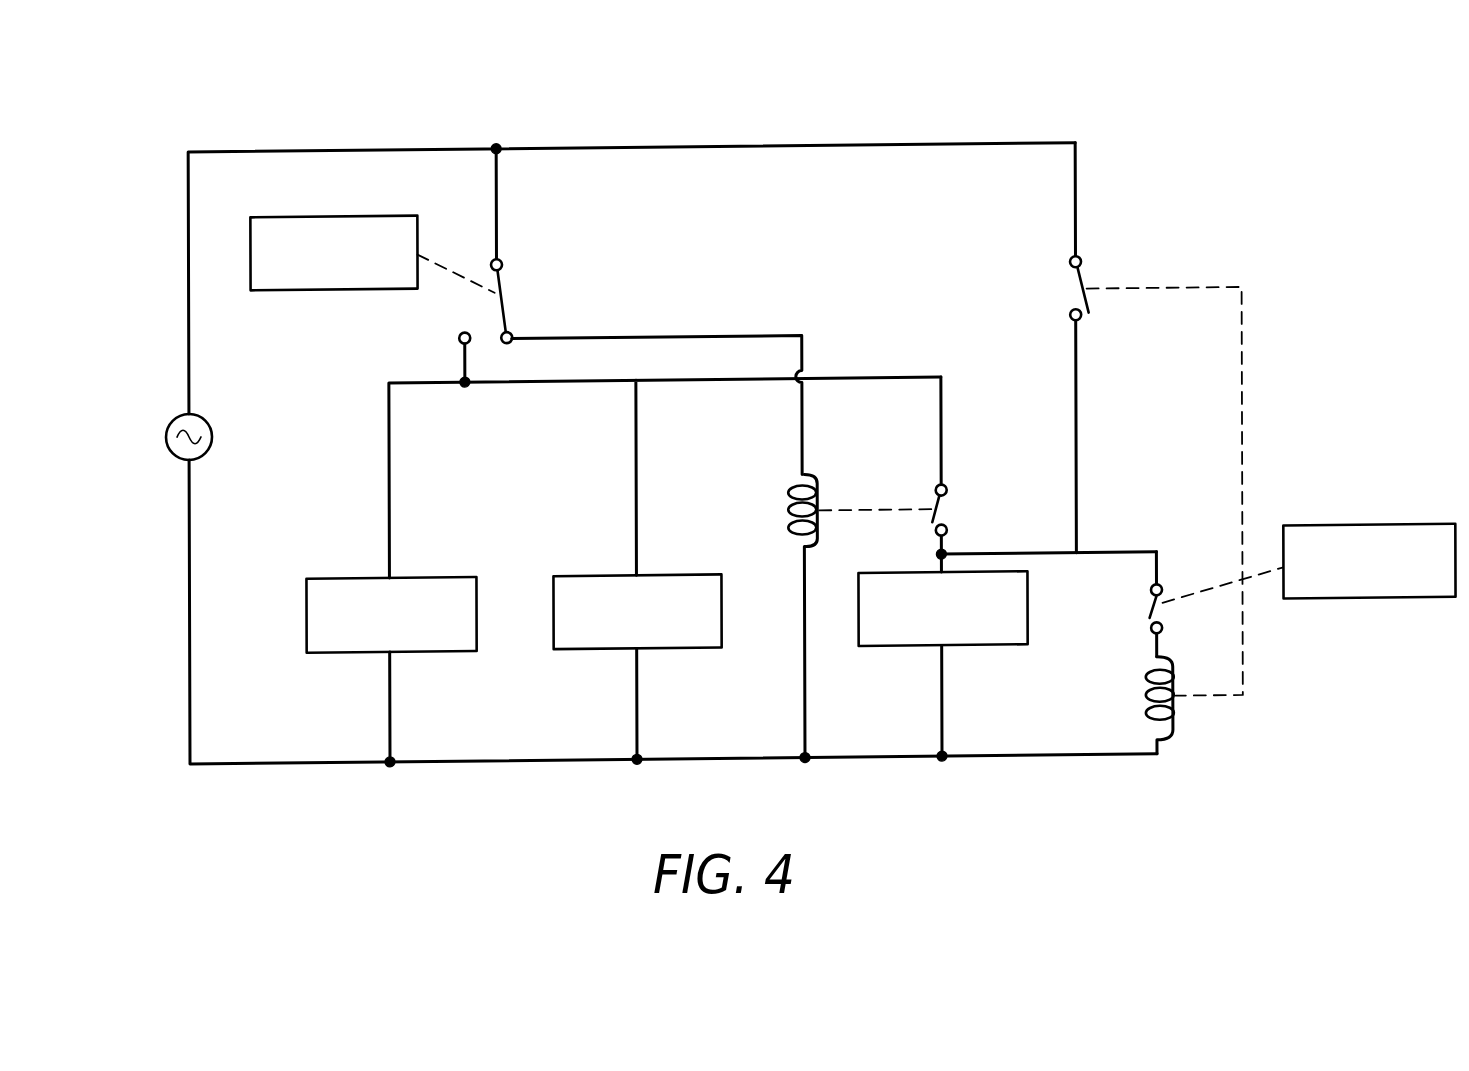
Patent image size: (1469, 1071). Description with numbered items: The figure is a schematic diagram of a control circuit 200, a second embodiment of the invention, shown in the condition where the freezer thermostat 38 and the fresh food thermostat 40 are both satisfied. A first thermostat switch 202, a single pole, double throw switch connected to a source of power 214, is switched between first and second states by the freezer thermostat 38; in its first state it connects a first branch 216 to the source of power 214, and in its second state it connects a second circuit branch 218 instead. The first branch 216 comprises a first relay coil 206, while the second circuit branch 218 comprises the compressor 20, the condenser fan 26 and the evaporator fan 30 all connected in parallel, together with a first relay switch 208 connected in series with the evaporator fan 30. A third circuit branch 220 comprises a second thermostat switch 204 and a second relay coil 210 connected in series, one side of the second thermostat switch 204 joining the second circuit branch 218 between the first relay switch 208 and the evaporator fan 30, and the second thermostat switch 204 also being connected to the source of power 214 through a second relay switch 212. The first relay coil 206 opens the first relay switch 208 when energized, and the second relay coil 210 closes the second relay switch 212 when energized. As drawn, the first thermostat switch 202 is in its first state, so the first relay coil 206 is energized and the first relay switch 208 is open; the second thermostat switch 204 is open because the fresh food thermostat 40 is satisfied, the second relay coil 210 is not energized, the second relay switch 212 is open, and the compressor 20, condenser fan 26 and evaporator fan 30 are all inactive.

The control circuit 200 is at (1281, 160).
The first thermostat switch 202 is at (504, 293).
The second thermostat switch 204 is at (697, 385).
The first relay coil 206 is at (815, 489).
The first relay switch 208 is at (950, 510).
The second relay coil 210 is at (1147, 705).
The second relay switch 212 is at (1080, 282).
The source of power 214 is at (167, 452).
The first branch 216 is at (694, 334).
The second circuit branch 218 is at (452, 361).
The third circuit branch 220 is at (1114, 554).
The compressor 20 is at (367, 580).
The condenser fan 26 is at (693, 580).
The evaporator fan 30 is at (897, 652).
The freezer thermostat 38 is at (265, 291).
The fresh food thermostat 40 is at (1410, 611).